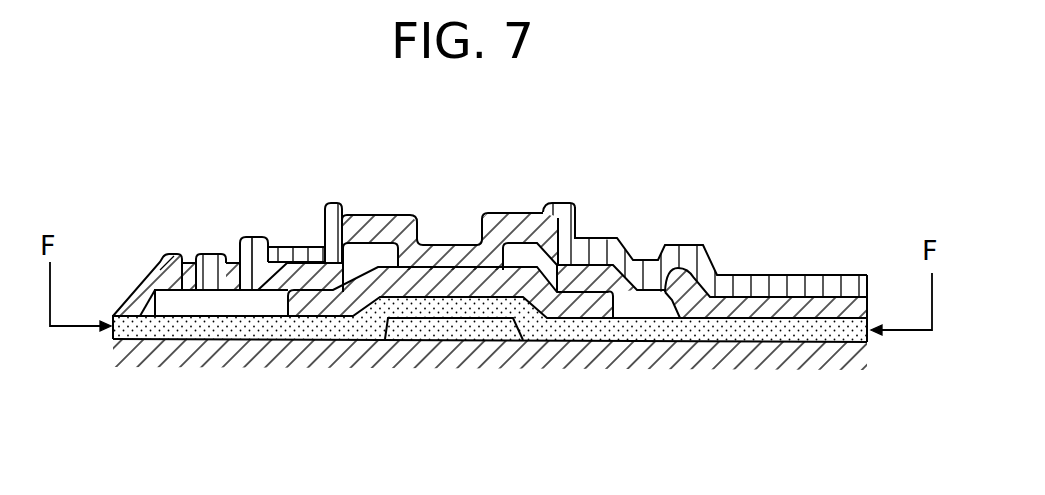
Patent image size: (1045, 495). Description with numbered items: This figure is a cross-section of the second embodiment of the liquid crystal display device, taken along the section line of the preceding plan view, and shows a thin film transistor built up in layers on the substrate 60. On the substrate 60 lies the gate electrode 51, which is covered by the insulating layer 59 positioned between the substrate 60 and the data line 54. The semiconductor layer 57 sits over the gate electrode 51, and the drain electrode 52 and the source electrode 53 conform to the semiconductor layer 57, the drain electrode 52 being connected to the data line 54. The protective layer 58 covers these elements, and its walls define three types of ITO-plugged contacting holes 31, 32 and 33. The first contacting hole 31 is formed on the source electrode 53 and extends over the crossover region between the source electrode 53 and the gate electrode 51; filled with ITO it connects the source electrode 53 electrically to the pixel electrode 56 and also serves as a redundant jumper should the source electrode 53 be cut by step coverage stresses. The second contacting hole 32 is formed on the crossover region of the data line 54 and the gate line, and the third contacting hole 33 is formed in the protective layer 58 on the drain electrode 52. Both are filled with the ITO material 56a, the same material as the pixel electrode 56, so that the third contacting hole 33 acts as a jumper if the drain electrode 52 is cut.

The first contacting hole 31 is at (577, 222).
The second contacting hole 32 is at (168, 252).
The third contacting hole 33 is at (265, 236).
The gate electrode 51 is at (503, 330).
The drain electrode 52 is at (373, 255).
The source electrode 53 is at (513, 253).
The data line 54 is at (210, 305).
The pixel electrode 56 is at (780, 287).
The ITO material 56a is at (200, 254).
The semiconductor layer 57 is at (388, 280).
The protective layer 58 is at (123, 294).
The insulating layer 59 is at (805, 330).
The substrate 60 is at (670, 360).